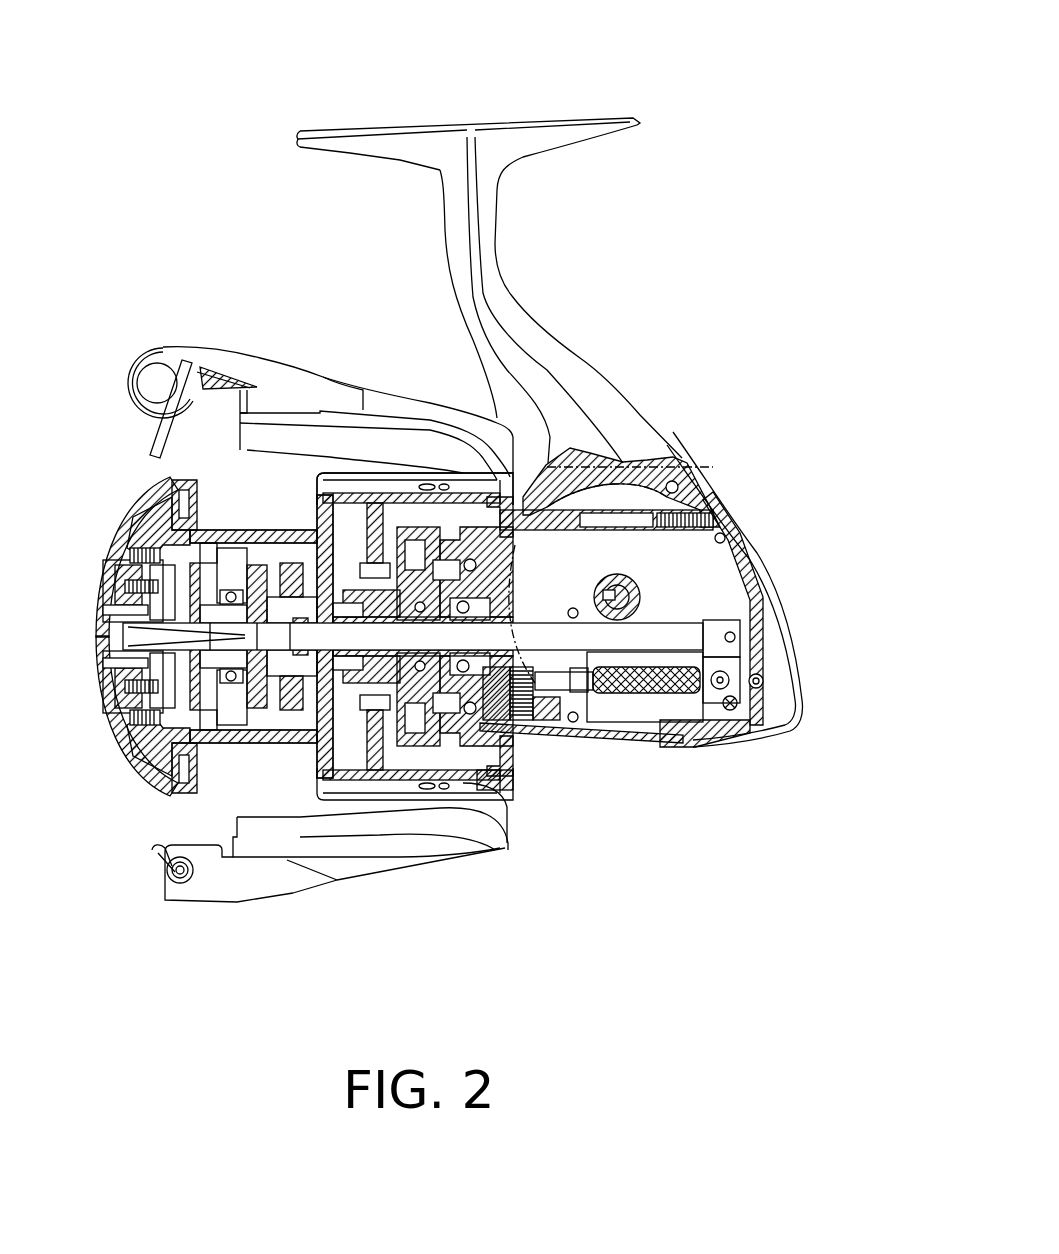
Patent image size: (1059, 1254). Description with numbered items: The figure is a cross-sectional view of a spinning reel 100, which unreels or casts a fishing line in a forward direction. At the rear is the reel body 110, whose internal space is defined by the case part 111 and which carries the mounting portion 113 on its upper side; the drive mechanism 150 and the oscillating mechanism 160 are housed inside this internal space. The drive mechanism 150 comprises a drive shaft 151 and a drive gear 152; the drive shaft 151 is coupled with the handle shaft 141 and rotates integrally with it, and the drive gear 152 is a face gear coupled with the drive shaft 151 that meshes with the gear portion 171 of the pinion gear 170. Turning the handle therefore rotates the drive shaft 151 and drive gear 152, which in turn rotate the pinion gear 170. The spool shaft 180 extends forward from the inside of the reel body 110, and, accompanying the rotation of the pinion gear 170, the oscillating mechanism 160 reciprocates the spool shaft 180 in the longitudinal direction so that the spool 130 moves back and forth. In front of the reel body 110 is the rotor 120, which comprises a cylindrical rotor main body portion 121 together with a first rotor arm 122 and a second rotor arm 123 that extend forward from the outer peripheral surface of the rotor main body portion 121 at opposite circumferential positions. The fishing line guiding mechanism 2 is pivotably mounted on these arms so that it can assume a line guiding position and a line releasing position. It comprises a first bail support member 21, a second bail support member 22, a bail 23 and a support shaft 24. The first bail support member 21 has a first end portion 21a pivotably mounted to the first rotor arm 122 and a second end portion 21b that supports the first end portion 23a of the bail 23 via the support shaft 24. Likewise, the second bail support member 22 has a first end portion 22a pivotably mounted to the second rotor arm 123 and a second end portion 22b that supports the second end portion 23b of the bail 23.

The spinning reel 100 is at (702, 92).
The reel body 110 is at (589, 336).
The case part 111 is at (693, 460).
The rod attachment leg 113 is at (550, 105).
The rotor 120 is at (406, 375).
The rotor main body portion 121 is at (413, 487).
The first rotor arm 122 is at (363, 407).
The second rotor arm 123 is at (400, 862).
The spool 130 is at (254, 532).
The handle shaft 141 is at (560, 610).
The drive mechanism 150 is at (663, 600).
The drive shaft 151 is at (600, 580).
The drive gear 152 is at (725, 640).
The oscillating mechanism 160 is at (693, 705).
The pinion gear 170 is at (550, 690).
The gear portion 171 is at (530, 622).
The spool shaft 180 is at (650, 640).
The fishing line guiding mechanism 2 is at (125, 329).
The first bail support member 21 is at (243, 345).
The first end portion 21a is at (323, 383).
The second end portion 21b is at (165, 346).
The second bail support member 22 is at (232, 903).
The first end portion 22a is at (290, 890).
The second end portion 22b is at (168, 903).
The bail 23 is at (152, 440).
The first end portion 23a is at (133, 397).
The second end portion 23b is at (158, 855).
The support shaft 24 is at (150, 380).